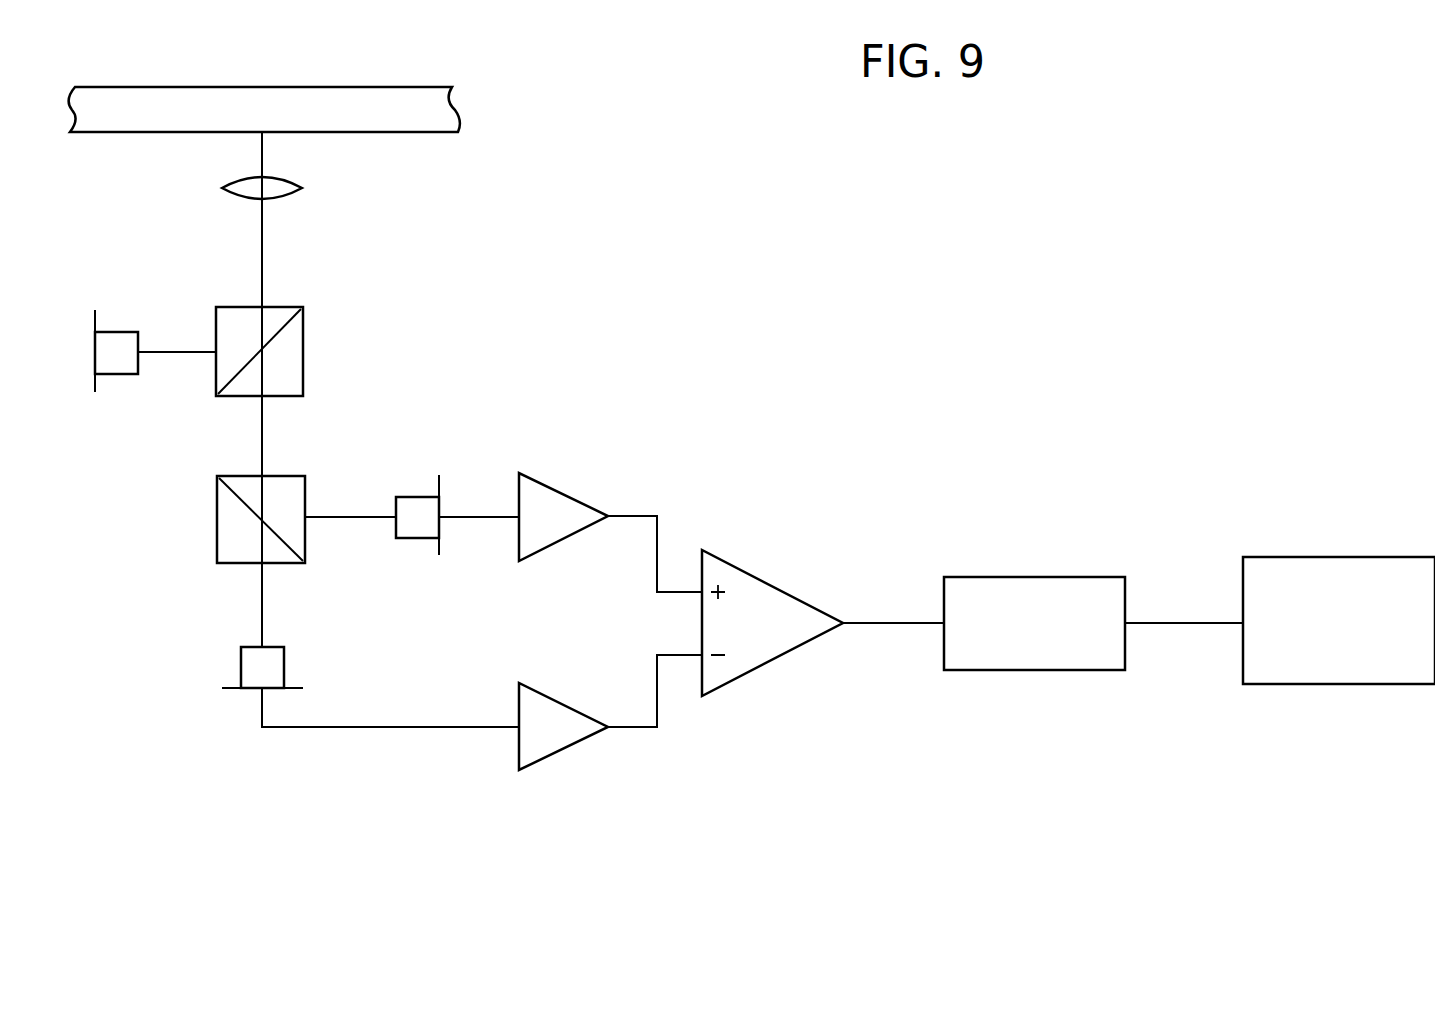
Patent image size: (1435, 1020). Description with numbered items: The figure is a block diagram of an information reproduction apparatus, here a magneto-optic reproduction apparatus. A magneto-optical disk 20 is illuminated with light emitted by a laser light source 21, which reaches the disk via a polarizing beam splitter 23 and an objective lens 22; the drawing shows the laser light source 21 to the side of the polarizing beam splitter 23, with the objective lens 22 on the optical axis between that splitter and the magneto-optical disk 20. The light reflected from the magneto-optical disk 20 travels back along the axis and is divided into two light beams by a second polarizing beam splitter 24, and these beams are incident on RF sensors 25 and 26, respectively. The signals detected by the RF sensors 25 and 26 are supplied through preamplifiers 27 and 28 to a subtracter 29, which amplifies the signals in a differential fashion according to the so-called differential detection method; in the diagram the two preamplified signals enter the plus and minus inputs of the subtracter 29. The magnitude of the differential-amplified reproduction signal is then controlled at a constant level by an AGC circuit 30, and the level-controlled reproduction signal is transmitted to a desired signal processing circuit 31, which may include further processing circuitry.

The magneto-optical disk 20 is at (458, 108).
The laser light source 21 is at (118, 332).
The objective lens 22 is at (300, 183).
The polarizing beam splitter 23 is at (305, 350).
The polarizing beam splitter 24 is at (290, 477).
The RF sensor 25 is at (243, 690).
The RF sensor 26 is at (413, 538).
The preamplifier 27 is at (556, 490).
The preamplifier 28 is at (557, 753).
The subtracter 29 is at (740, 568).
The AGC circuit 30 is at (1040, 577).
The signal processing circuit 31 is at (1353, 557).